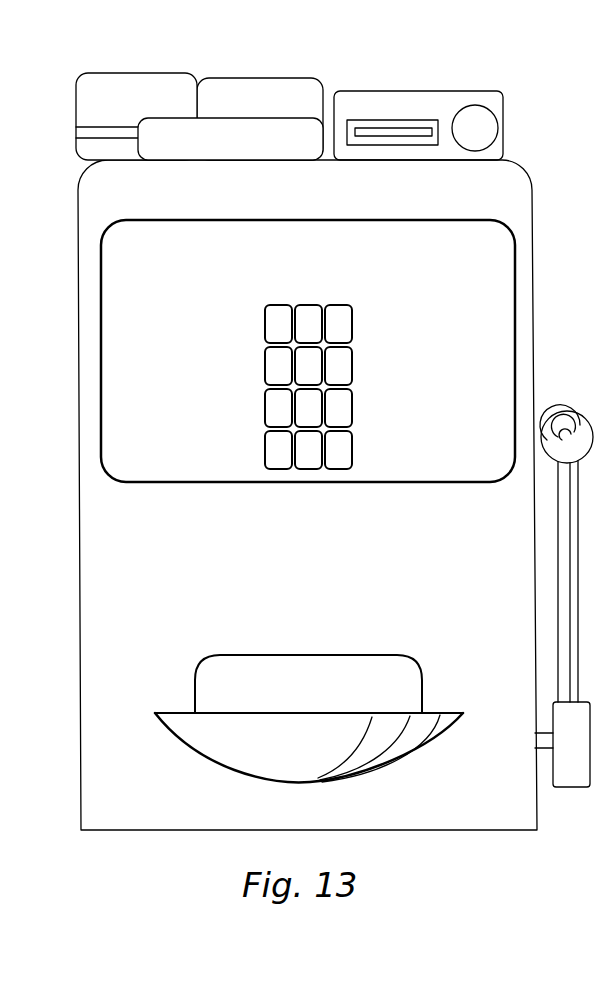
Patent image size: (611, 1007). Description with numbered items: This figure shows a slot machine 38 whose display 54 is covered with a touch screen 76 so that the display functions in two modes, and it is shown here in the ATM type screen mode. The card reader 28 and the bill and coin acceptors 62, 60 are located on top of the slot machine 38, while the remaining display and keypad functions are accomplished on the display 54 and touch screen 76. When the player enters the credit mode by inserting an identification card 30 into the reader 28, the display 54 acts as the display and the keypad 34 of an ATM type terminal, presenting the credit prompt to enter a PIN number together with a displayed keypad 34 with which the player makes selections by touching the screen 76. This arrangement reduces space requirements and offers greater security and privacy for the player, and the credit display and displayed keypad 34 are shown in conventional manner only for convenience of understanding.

The slot machine 38 is at (77, 433).
The identification card 30 is at (178, 84).
The card reader 28 is at (258, 83).
The bill acceptor 62 is at (415, 91).
The coin acceptor 60 is at (497, 129).
The touch screen 76 is at (465, 352).
The display 54 is at (466, 268).
The keypad 34 is at (367, 392).